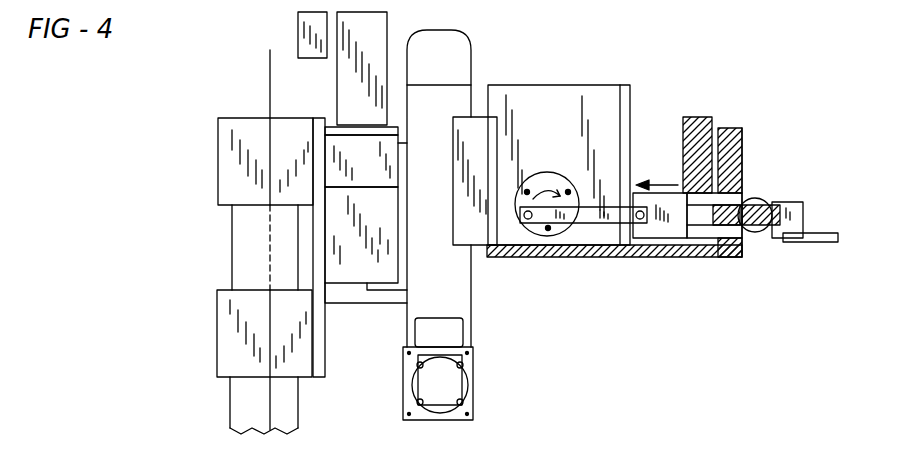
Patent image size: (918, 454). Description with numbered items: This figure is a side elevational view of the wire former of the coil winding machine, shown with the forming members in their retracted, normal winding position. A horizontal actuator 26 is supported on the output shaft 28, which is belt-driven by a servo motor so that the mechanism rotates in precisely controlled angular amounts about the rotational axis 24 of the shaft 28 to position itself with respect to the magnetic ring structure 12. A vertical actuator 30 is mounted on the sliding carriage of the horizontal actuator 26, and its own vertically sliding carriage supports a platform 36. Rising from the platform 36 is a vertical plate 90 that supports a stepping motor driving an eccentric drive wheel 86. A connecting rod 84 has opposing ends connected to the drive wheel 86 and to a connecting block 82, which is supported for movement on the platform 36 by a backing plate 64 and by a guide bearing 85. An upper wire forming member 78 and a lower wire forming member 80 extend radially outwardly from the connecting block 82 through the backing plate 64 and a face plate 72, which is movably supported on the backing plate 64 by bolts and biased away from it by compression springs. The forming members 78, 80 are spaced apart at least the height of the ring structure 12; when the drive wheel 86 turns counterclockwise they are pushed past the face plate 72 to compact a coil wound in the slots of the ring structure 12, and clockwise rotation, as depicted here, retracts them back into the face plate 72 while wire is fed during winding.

The magnetic ring structure 12 is at (764, 228).
The rotational axis 24 is at (270, 88).
The horizontal actuator 26 is at (362, 283).
The output shaft 28 is at (232, 250).
The vertical actuator 30 is at (471, 300).
The platform 36 is at (520, 258).
The backing plate 64 is at (700, 117).
The face plate 72 is at (740, 128).
The upper wire forming member 78 is at (742, 193).
The lower wire forming member 80 is at (733, 258).
The connecting block 82 is at (683, 258).
The connecting rod 84 is at (603, 258).
The guide bearing 85 is at (652, 258).
The eccentric drive wheel 86 is at (547, 172).
The vertical plate 90 is at (560, 85).